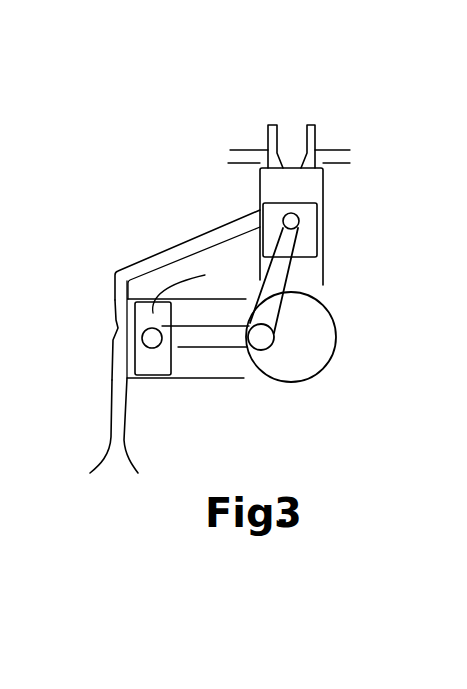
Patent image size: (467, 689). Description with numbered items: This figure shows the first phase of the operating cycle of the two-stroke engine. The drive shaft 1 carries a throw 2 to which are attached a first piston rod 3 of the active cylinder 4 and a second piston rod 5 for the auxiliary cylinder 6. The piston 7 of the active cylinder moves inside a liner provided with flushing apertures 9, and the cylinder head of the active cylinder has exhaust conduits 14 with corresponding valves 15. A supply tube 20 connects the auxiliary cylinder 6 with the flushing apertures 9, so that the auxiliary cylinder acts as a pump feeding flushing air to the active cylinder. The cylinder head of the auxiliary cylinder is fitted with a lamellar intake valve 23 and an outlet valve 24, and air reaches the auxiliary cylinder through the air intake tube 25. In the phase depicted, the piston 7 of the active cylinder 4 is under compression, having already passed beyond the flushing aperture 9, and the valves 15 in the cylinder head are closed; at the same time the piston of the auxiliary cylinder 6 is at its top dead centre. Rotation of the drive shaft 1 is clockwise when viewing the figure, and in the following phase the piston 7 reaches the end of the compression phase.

The drive shaft 1 is at (372, 352).
The throw 2 is at (263, 341).
The first piston rod 3 is at (280, 277).
The active cylinder 4 is at (352, 236).
The second piston rod 5 is at (227, 343).
The auxiliary cylinder 6 is at (172, 416).
The piston of the active cylinder 7 is at (307, 212).
The flushing apertures 9 is at (243, 221).
The exhaust conduits 14 is at (230, 149).
The valves 15 is at (268, 137).
The supply tube 20 is at (150, 269).
The lamellar intake valve 23 is at (118, 346).
The outlet valve 24 is at (115, 328).
The air intake tube 25 is at (113, 445).